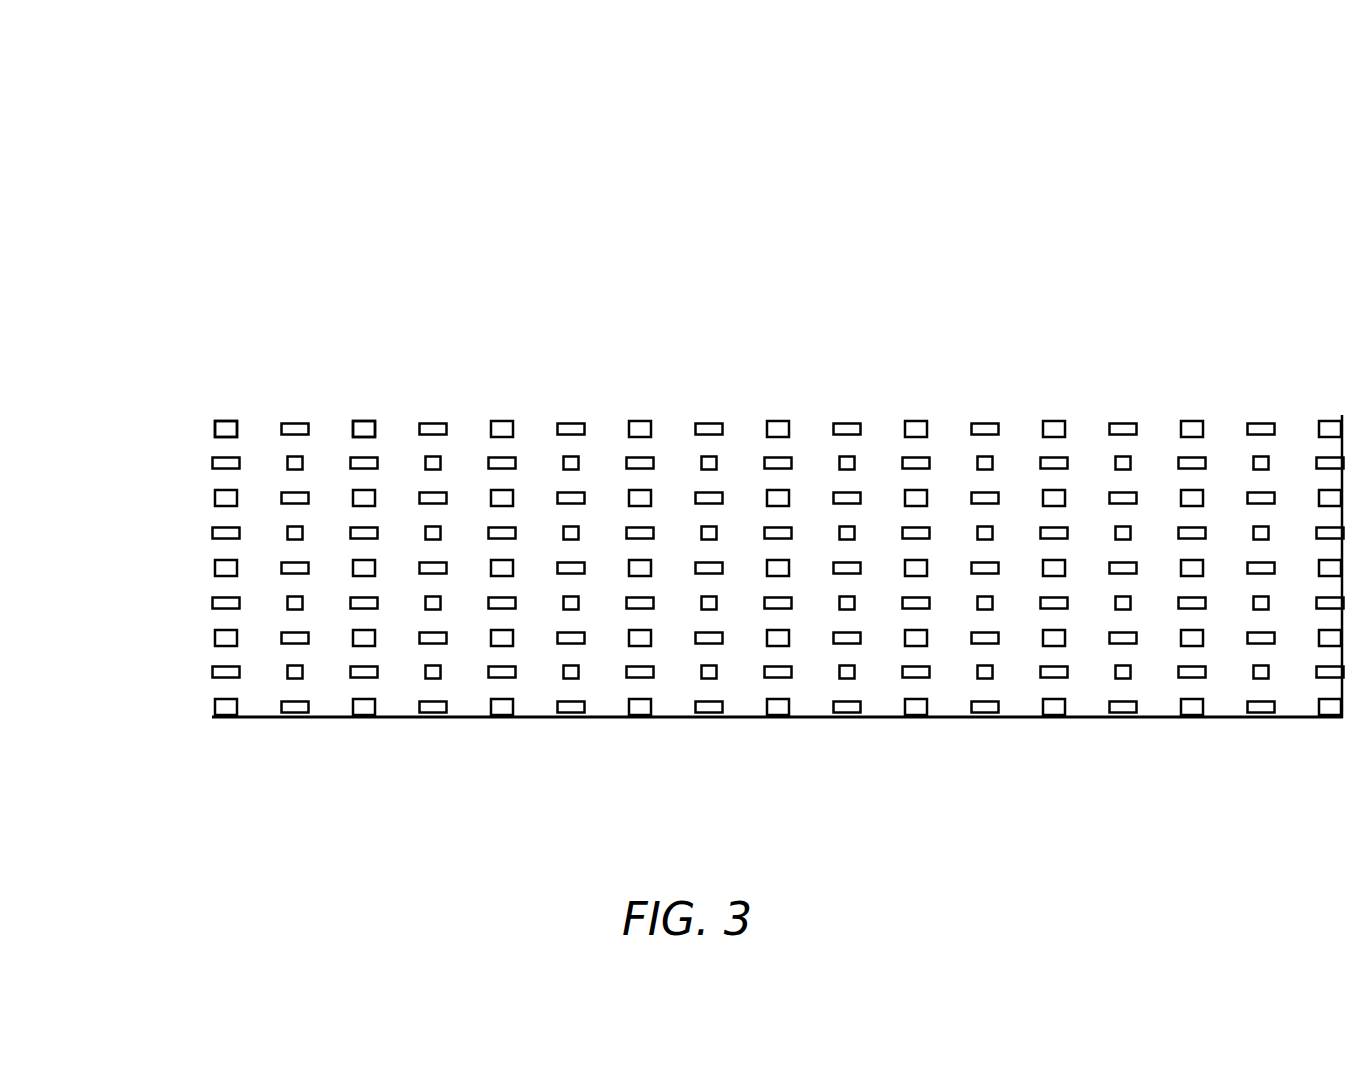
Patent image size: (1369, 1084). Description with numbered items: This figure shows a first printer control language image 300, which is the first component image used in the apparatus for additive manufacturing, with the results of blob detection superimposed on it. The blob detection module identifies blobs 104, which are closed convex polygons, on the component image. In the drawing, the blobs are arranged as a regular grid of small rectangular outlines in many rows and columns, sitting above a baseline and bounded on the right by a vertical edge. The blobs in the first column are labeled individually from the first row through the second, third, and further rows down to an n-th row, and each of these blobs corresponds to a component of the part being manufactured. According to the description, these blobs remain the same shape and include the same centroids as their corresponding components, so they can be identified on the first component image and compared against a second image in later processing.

The first printer control language image 300 is at (724, 173).
The blobs 104 is at (355, 405).